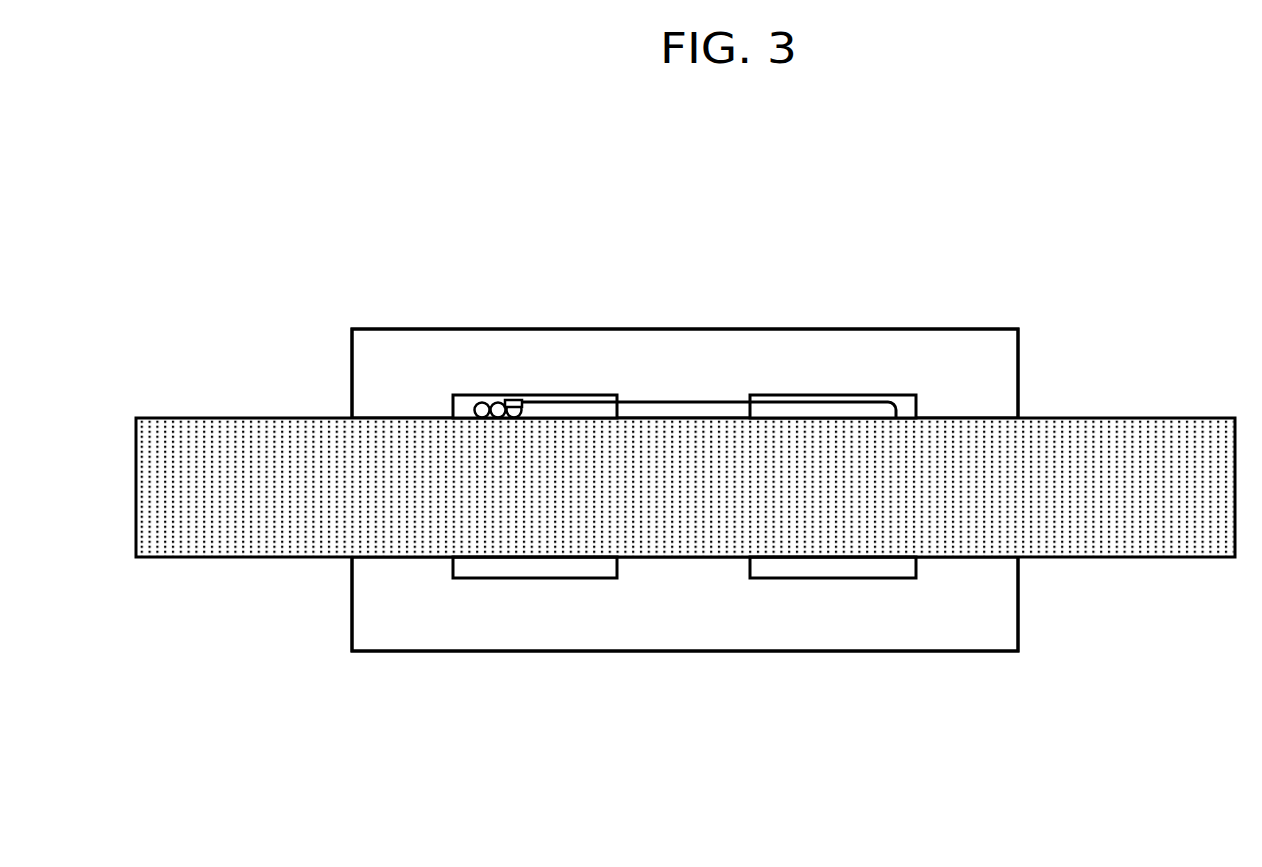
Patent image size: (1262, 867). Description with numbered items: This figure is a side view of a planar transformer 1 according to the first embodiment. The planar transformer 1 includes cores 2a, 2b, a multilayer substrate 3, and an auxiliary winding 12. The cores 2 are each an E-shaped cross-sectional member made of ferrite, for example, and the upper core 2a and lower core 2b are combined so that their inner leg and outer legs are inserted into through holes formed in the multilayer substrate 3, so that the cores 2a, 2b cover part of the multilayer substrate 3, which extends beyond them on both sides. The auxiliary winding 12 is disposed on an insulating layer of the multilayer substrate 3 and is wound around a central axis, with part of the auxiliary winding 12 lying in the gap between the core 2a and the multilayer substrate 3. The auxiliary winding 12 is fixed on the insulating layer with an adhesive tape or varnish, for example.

The planar transformer 1 is at (1249, 149).
The cores 2 is at (943, 317).
The core 2a is at (395, 328).
The core 2b is at (373, 651).
The multilayer substrate 3 is at (1080, 410).
The auxiliary winding 12 is at (533, 400).